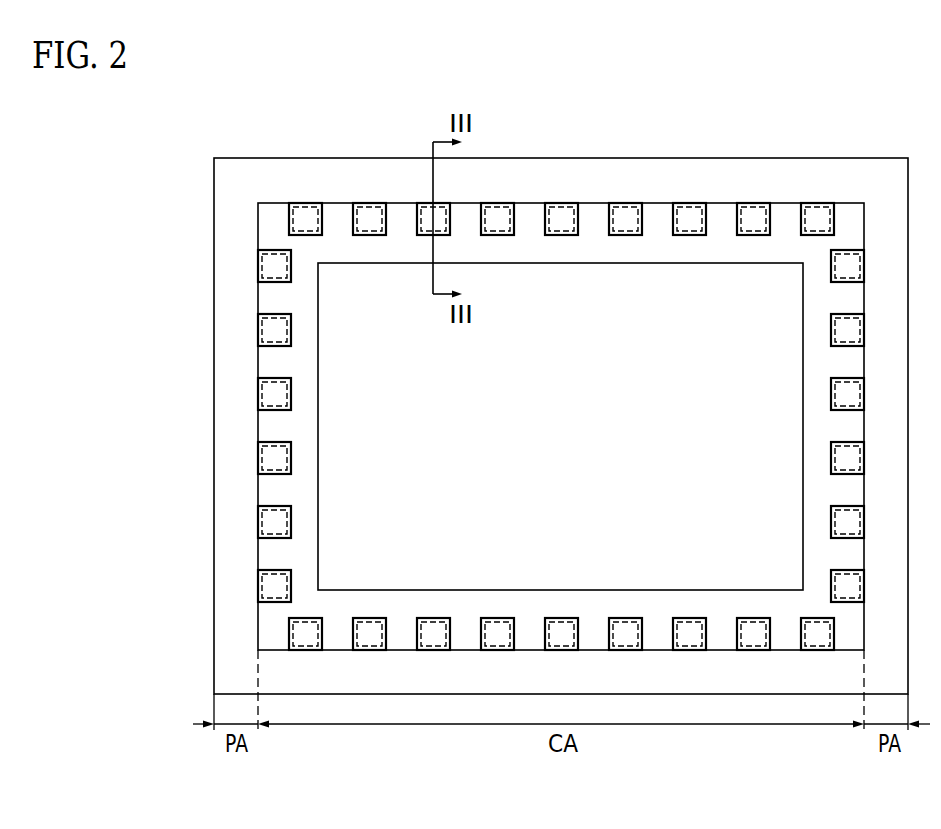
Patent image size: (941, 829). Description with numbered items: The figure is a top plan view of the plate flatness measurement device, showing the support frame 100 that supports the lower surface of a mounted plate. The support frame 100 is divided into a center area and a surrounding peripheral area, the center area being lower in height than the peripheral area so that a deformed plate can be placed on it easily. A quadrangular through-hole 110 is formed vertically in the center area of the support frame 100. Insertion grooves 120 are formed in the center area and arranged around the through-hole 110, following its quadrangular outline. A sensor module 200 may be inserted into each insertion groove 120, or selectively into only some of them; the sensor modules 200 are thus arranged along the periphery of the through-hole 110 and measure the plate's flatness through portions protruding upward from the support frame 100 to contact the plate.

The support frame 100 is at (815, 158).
The through-hole 110 is at (718, 291).
The insertion groove 120 is at (619, 205).
The sensor module 200 is at (676, 205).